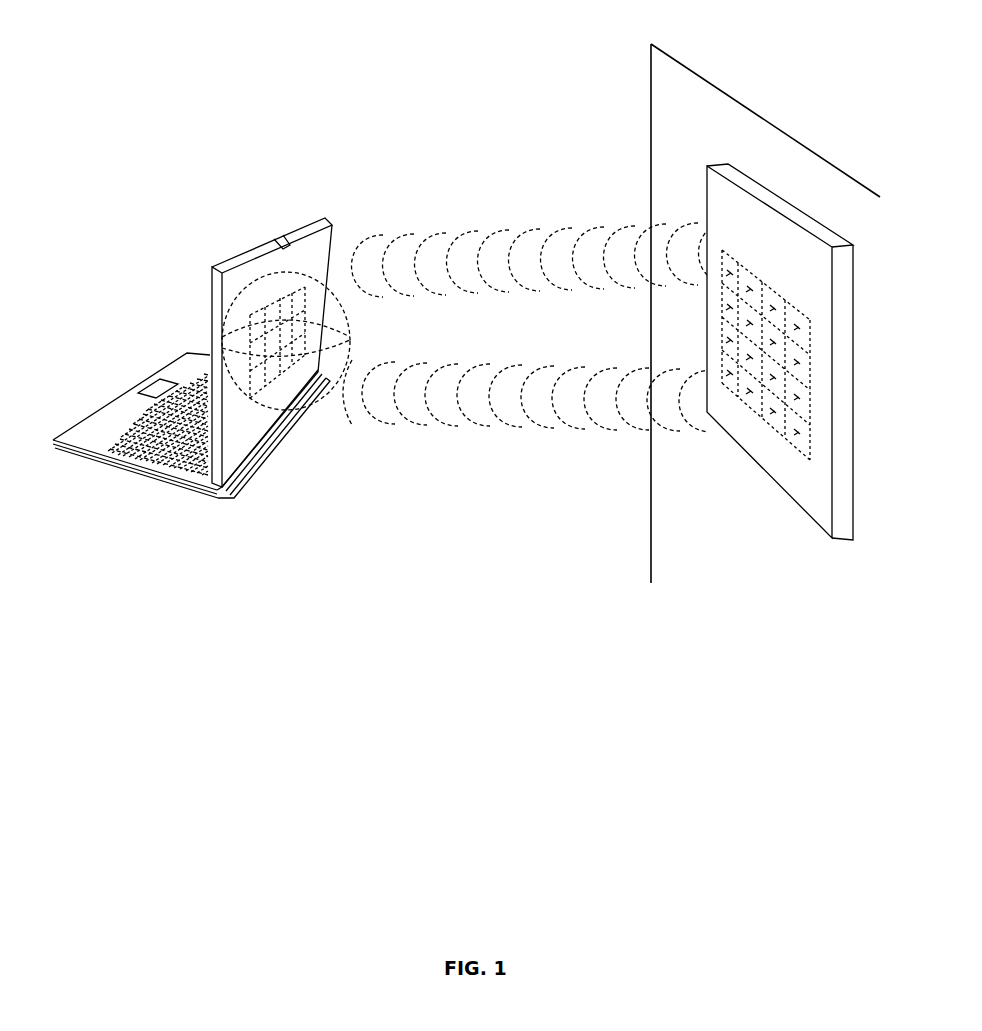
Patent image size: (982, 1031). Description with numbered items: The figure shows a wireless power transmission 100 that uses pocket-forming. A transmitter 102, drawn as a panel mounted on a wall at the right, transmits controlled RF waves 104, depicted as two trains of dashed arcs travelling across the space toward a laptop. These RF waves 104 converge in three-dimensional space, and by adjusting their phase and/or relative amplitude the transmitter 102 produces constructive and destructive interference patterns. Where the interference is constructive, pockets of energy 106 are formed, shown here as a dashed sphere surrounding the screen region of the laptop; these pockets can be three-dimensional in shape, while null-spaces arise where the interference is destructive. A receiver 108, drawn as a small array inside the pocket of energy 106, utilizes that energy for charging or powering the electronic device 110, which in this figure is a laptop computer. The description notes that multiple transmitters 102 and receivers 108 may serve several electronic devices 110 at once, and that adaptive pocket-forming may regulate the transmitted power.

The wireless power transmission 100 is at (146, 123).
The transmitter 102 is at (763, 223).
The RF waves 104 is at (513, 262).
The pockets of energy 106 is at (253, 288).
The receiver 108 is at (250, 372).
The electronic device 110 is at (165, 477).